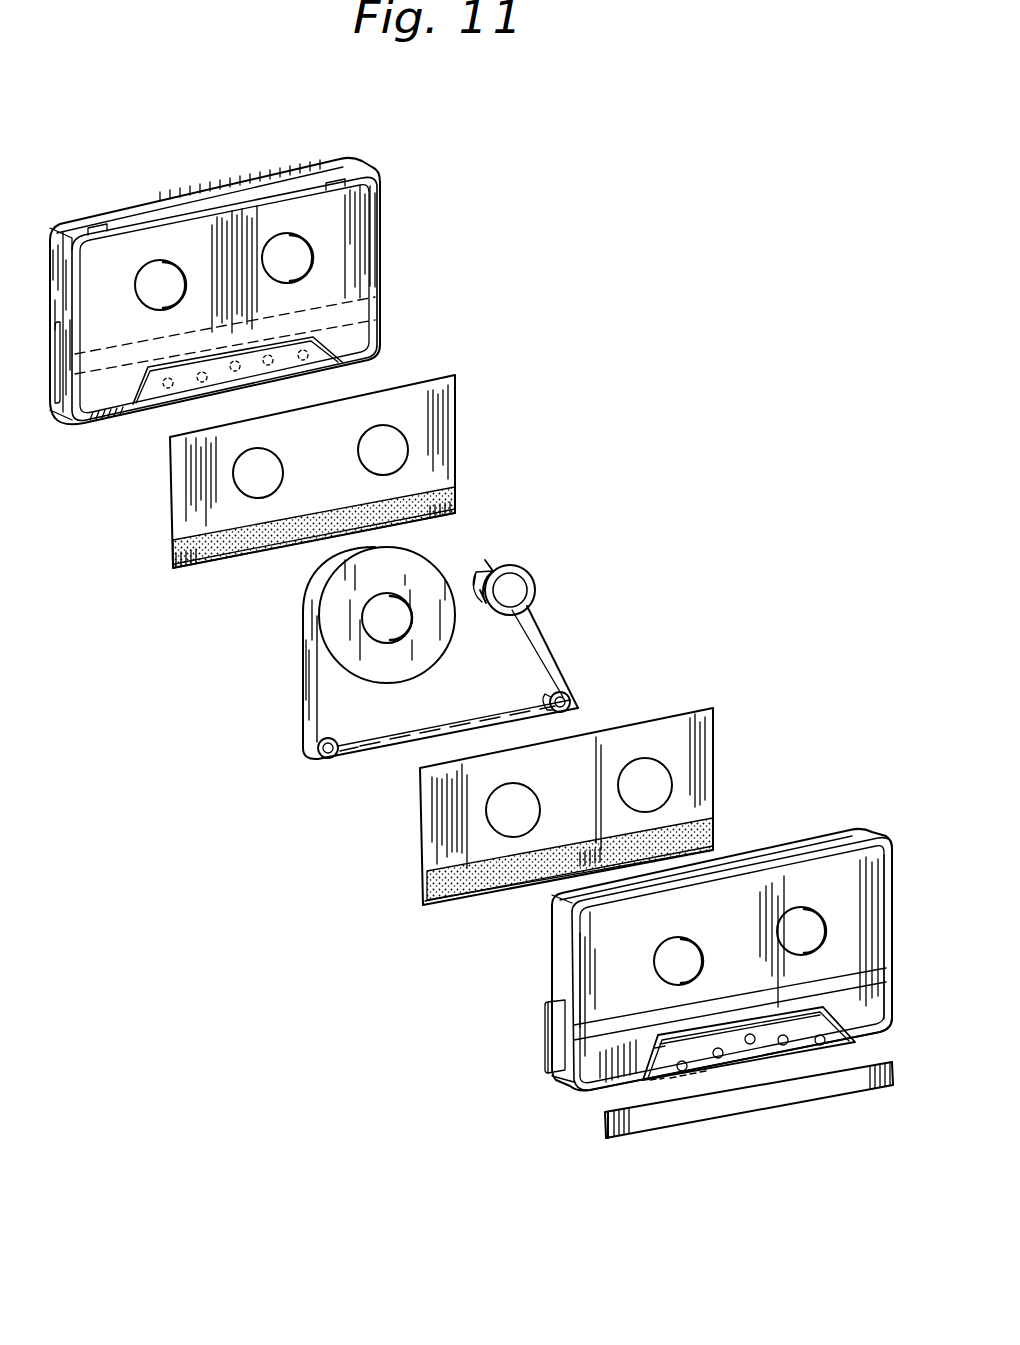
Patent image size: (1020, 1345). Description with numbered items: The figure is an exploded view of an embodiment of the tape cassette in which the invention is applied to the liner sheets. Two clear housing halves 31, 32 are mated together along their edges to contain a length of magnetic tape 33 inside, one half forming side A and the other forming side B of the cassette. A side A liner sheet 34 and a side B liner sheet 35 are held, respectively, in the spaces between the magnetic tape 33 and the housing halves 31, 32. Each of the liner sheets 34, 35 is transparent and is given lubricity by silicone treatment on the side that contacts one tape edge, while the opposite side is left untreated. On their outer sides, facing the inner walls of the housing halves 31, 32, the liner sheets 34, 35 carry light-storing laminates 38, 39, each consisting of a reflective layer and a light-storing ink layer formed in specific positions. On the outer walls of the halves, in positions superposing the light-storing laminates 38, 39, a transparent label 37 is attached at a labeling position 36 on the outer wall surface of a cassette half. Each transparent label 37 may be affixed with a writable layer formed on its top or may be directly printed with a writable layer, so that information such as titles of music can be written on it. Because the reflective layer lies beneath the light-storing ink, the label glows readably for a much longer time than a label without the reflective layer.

The housing half 31 is at (552, 991).
The housing half 32 is at (218, 186).
The magnetic tape 33 is at (430, 578).
The side A liner sheet 34 is at (628, 718).
The side B liner sheet 35 is at (428, 378).
The labeling position 36 is at (590, 1036).
The transparent label 37 is at (606, 1121).
The light-storing laminate 38 is at (422, 884).
The light-storing laminate 39 is at (172, 551).